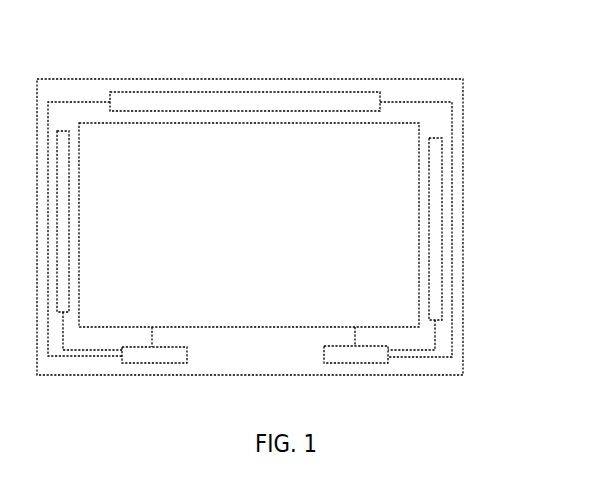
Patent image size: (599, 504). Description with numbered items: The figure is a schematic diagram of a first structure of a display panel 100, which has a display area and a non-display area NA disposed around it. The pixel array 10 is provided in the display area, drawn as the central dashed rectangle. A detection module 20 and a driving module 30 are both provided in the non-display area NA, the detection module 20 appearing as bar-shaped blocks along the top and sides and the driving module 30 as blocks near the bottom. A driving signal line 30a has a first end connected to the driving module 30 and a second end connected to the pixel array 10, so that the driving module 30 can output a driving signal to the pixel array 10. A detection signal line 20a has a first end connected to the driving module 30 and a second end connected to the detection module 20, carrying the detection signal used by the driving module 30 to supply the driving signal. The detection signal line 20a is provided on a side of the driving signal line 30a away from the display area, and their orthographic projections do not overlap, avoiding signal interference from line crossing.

The display panel 100 is at (120, 56).
The pixel array 10 is at (412, 139).
The detection module 20 is at (350, 97).
The detection signal line 20a is at (453, 308).
The driving module 30 is at (368, 357).
The driving signal line 30a is at (355, 335).
The non-display area NA is at (463, 212).